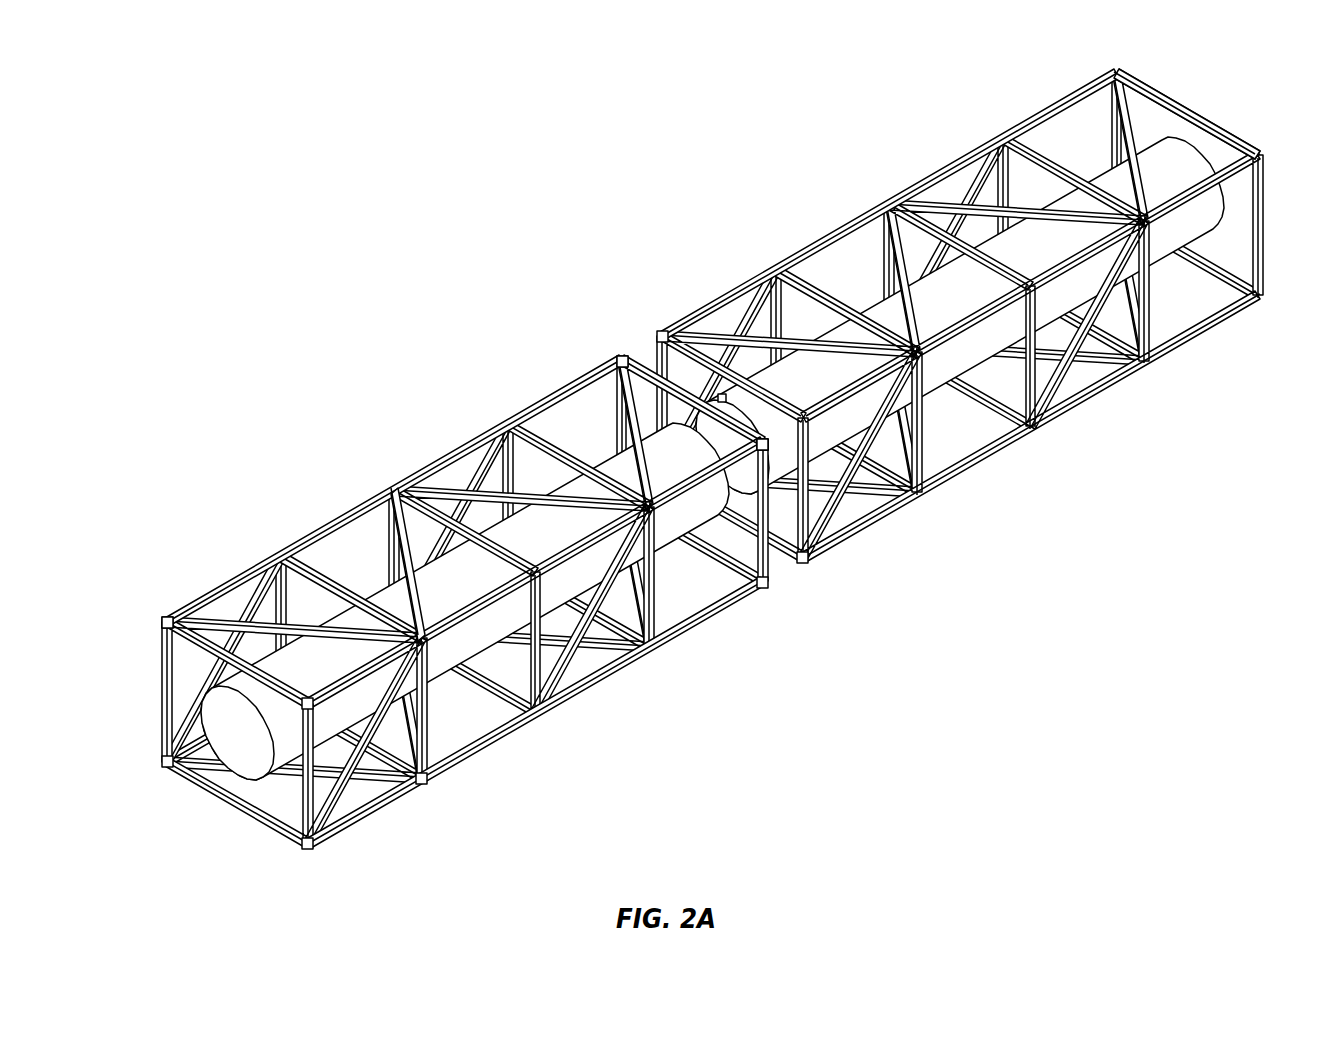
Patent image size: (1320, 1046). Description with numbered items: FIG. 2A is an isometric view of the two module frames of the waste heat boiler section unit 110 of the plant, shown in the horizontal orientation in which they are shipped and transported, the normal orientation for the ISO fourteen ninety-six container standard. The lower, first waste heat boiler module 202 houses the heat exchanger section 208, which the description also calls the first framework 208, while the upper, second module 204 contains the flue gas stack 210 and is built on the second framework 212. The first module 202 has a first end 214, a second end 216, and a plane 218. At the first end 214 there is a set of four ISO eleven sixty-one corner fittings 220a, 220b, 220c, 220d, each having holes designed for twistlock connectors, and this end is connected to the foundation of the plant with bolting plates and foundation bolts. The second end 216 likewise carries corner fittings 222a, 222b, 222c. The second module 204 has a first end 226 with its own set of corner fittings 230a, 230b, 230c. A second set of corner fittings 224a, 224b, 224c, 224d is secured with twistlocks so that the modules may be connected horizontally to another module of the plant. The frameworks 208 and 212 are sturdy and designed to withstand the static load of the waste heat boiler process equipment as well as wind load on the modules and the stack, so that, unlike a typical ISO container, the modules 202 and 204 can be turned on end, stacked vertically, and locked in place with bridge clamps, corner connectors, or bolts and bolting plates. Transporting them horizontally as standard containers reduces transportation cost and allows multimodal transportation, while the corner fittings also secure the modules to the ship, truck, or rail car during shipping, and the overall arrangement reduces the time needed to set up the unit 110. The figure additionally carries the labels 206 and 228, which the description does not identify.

The waste heat boiler section unit 110 is at (867, 633).
The first waste heat boiler module 202 is at (413, 542).
The second waste heat boiler module 204 is at (960, 315).
The first cylindrical member 206 is at (593, 445).
The first framework 208 is at (408, 486).
The flue gas stack 210 is at (960, 295).
The second framework 212 is at (889, 204).
The first end 214 is at (190, 680).
The second end 216 is at (737, 604).
The plane 218 is at (480, 490).
The corner fitting 220a is at (302, 846).
The corner fitting 220b is at (262, 773).
The corner fitting 220c is at (160, 766).
The corner fitting 220d is at (160, 625).
The corner fitting 222a is at (620, 357).
The corner fitting 222b is at (790, 470).
The corner fitting 222c is at (764, 586).
The corner fitting of second set 224a is at (615, 358).
The corner fitting of second set 224b is at (757, 437).
The corner fitting of second set 224c is at (166, 616).
The corner fitting of second set 224d is at (424, 779).
The first end 226 is at (722, 398).
The end frame 228 is at (1195, 100).
The corner fitting 230a is at (803, 560).
The corner fitting 230b is at (768, 450).
The corner fitting 230c is at (661, 332).